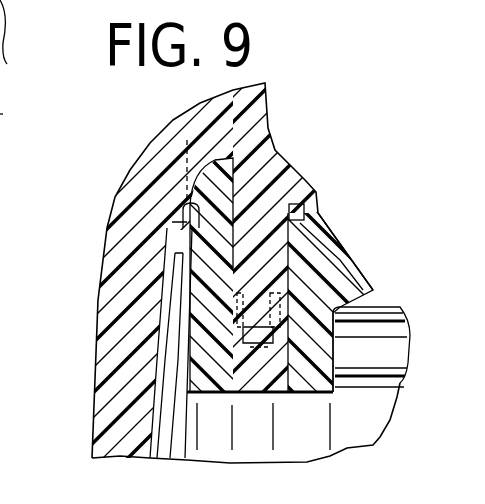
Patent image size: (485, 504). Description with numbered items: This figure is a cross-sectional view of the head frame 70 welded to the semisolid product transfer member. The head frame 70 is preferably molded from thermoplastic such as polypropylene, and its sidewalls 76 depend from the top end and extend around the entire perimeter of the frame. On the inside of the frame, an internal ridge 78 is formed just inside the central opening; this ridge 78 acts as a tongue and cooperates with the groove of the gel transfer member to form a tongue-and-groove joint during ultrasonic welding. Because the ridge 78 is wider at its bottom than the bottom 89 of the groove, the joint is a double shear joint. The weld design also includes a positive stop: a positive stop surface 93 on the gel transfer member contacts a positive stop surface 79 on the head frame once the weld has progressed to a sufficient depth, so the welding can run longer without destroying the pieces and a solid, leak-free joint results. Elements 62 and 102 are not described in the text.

The guide member 62 is at (0, 67).
The drive surface 102 is at (0, 119).
The head frame 70 is at (70, 392).
The sidewalls 76 is at (115, 308).
The internal ridge 78 is at (263, 240).
The positive stop surface 79 is at (297, 213).
The bottom of groove 89 is at (333, 344).
The positive stop surface 93 is at (302, 215).